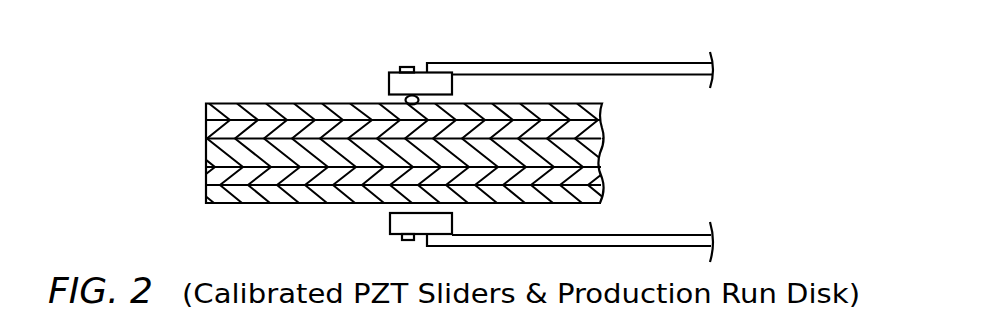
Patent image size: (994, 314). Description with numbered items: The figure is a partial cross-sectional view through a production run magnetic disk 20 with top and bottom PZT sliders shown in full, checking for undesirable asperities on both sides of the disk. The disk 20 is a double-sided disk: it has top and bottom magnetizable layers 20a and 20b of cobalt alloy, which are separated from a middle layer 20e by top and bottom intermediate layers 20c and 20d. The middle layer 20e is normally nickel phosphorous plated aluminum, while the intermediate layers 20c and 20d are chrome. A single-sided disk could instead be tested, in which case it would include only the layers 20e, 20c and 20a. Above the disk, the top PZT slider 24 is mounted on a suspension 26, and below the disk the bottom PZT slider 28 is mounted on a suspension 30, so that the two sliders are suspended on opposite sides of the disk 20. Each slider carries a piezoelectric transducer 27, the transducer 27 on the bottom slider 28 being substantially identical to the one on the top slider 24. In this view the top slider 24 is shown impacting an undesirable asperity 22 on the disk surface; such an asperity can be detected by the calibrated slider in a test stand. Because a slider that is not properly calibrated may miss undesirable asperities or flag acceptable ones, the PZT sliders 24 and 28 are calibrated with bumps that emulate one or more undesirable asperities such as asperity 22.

The production run magnetic disk 20 is at (245, 104).
The top magnetizable layer 20a is at (206, 108).
The bottom magnetizable layer 20b is at (206, 192).
The top intermediate layer 20c is at (206, 130).
The bottom intermediate layer 20d is at (206, 175).
The middle layer 20e is at (206, 153).
The undesirable asperity 22 is at (419, 99).
The PZT slider 24 is at (452, 79).
The suspension 26 is at (617, 63).
The piezoelectric transducer 27 is at (406, 67).
The bottom PZT slider 28 is at (452, 218).
The suspension 30 is at (612, 235).